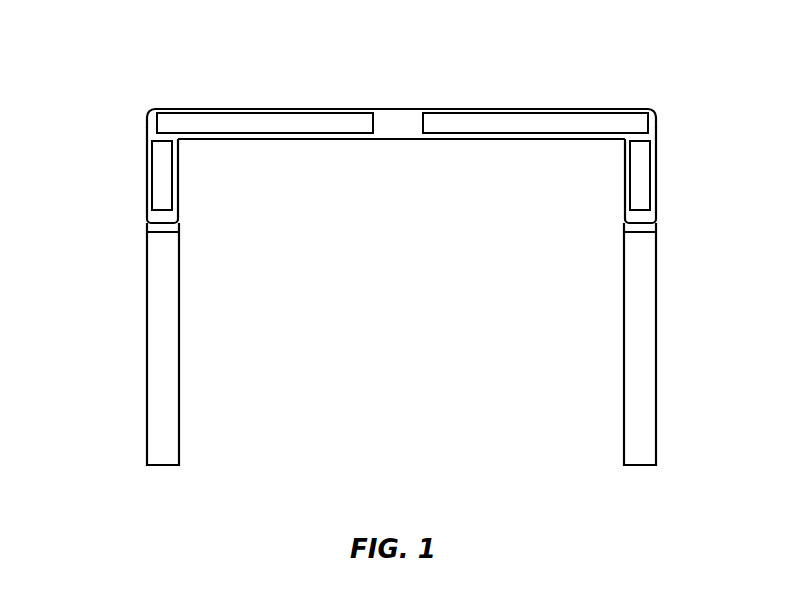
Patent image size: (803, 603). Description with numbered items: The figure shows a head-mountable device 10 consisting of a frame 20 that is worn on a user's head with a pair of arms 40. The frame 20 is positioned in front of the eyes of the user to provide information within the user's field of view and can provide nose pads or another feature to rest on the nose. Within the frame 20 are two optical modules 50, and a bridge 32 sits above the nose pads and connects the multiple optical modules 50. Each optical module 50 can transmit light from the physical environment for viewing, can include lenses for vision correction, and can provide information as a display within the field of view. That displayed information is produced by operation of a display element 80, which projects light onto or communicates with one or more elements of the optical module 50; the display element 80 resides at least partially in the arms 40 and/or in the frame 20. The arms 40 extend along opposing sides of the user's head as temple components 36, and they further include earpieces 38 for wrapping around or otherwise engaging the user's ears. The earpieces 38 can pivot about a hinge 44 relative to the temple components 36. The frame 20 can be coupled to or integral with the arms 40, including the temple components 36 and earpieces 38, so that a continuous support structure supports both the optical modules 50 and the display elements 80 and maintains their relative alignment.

The head-mountable device 10 is at (112, 64).
The frame 20 is at (609, 109).
The bridge 32 is at (396, 109).
The temple component 36 is at (146, 138).
The earpiece 38 is at (162, 375).
The arm 40 is at (180, 267).
The hinge 44 is at (146, 228).
The optical module 50 is at (193, 122).
The display element 80 is at (162, 185).